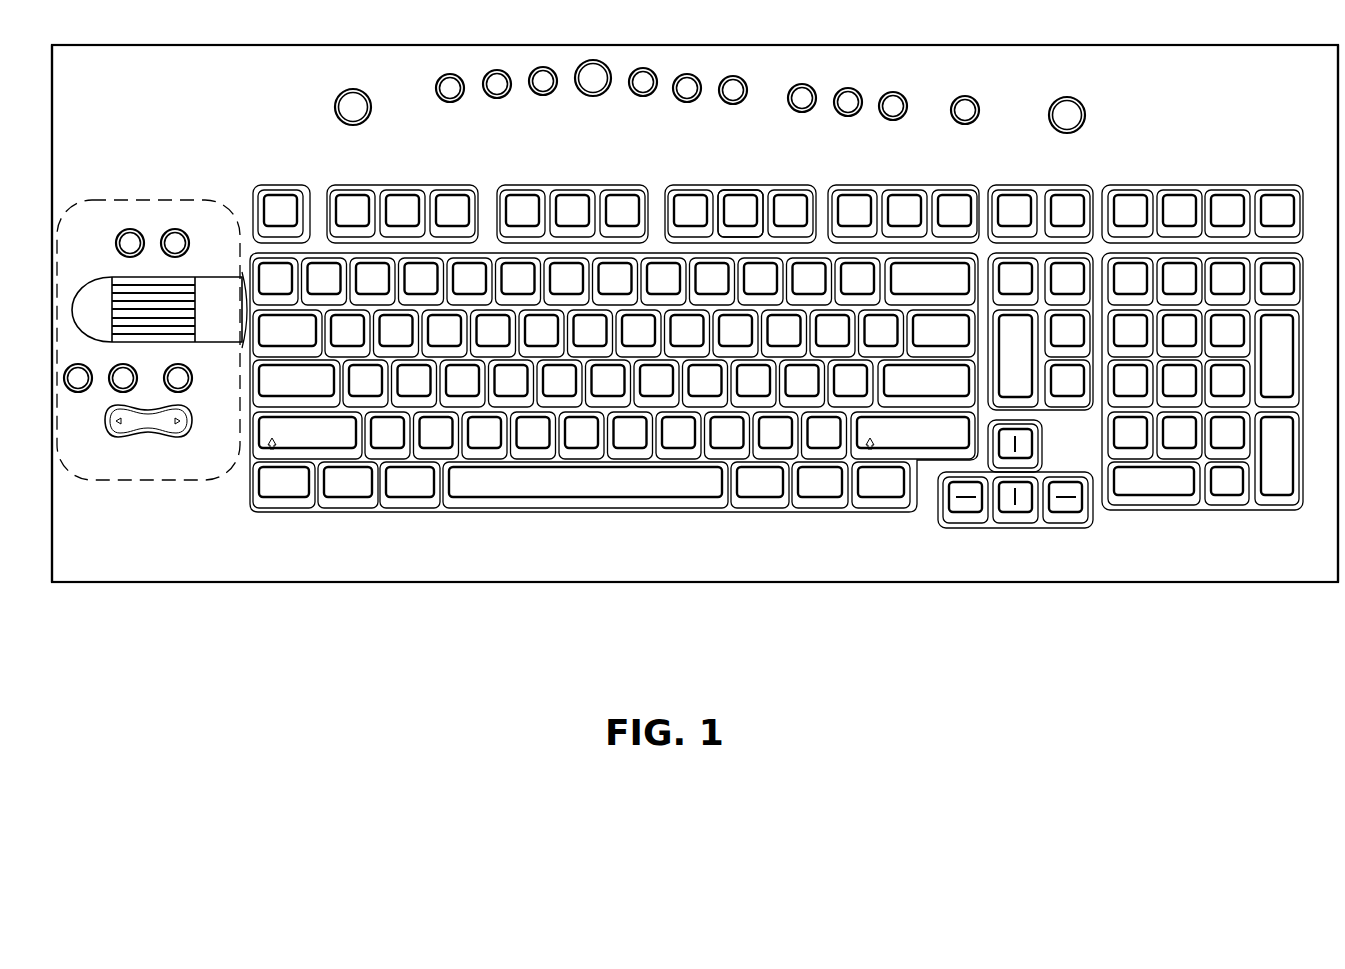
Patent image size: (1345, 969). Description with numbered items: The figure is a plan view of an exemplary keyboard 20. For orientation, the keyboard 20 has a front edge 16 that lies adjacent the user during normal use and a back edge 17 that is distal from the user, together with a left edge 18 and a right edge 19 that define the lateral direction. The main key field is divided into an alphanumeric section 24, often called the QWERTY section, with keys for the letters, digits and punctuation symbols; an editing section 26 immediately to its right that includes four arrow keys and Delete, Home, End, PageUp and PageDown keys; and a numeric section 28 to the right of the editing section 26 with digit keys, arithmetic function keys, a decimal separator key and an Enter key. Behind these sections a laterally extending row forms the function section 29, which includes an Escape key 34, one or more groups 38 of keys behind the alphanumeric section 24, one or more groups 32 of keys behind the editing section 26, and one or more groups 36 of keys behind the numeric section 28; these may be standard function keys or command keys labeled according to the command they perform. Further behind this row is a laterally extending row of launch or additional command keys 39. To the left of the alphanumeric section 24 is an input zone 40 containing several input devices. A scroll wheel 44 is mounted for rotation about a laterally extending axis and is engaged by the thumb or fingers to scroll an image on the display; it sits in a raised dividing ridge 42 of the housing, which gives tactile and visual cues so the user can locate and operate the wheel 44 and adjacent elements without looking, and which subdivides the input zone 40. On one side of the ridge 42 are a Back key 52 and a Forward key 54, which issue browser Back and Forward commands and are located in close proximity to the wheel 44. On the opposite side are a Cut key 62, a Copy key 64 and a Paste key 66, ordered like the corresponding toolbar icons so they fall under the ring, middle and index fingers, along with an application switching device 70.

The front edge 16 is at (770, 583).
The back edge 17 is at (1130, 45).
The left edge 18 is at (52, 583).
The right edge 19 is at (1344, 585).
The keyboard 20 is at (476, 653).
The alphanumeric section 24 is at (900, 512).
The editing section 26 is at (1062, 410).
The numeric section 28 is at (1172, 512).
The function section 29 is at (760, 187).
The group of keys behind the editing section 32 is at (1045, 187).
The Escape key 34 is at (270, 190).
The group of keys behind the numeric section 36 is at (1200, 187).
The group of keys behind the alphanumeric section 38 is at (395, 187).
The launch keys 39 is at (545, 80).
The input zone 40 is at (183, 480).
The dividing ridge 42 is at (159, 297).
The scroll wheel 44 is at (120, 290).
The Back key 52 is at (118, 238).
The Forward key 54 is at (190, 240).
The Cut key 62 is at (88, 388).
The Copy key 64 is at (130, 389).
The Paste key 66 is at (190, 383).
The application switching device 70 is at (188, 422).